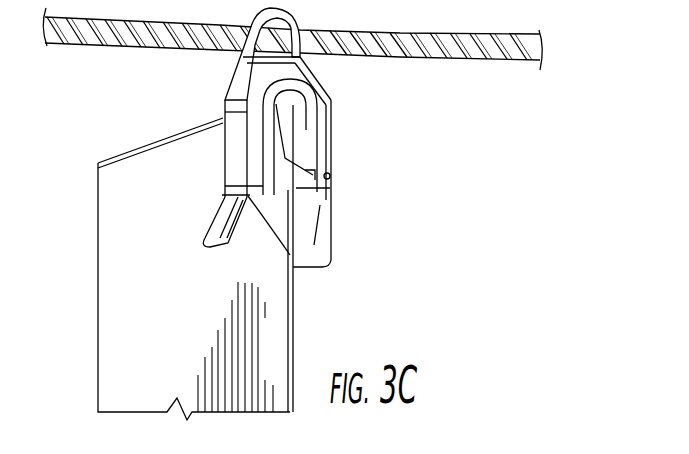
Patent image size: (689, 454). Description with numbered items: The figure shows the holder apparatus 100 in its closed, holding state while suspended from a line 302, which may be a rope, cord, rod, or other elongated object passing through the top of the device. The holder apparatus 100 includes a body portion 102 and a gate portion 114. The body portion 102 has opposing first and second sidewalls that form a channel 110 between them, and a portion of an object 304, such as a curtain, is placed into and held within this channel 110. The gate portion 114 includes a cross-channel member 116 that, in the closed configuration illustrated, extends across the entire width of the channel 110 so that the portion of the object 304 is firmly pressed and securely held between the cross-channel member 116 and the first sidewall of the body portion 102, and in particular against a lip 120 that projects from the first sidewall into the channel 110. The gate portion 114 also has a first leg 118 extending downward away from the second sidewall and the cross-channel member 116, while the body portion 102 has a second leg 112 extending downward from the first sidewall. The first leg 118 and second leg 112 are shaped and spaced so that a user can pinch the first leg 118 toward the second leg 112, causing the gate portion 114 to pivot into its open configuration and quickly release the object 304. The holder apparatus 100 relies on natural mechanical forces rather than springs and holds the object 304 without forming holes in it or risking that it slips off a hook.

The holder apparatus 100 is at (240, 143).
The body portion 102 is at (244, 121).
The channel 110 is at (276, 104).
The second leg 112 is at (213, 243).
The gate portion 114 is at (300, 197).
The cross-channel member 116 is at (288, 145).
The first leg 118 is at (326, 242).
The lip 120 is at (224, 186).
The line 302 is at (405, 48).
The object 304 is at (228, 277).